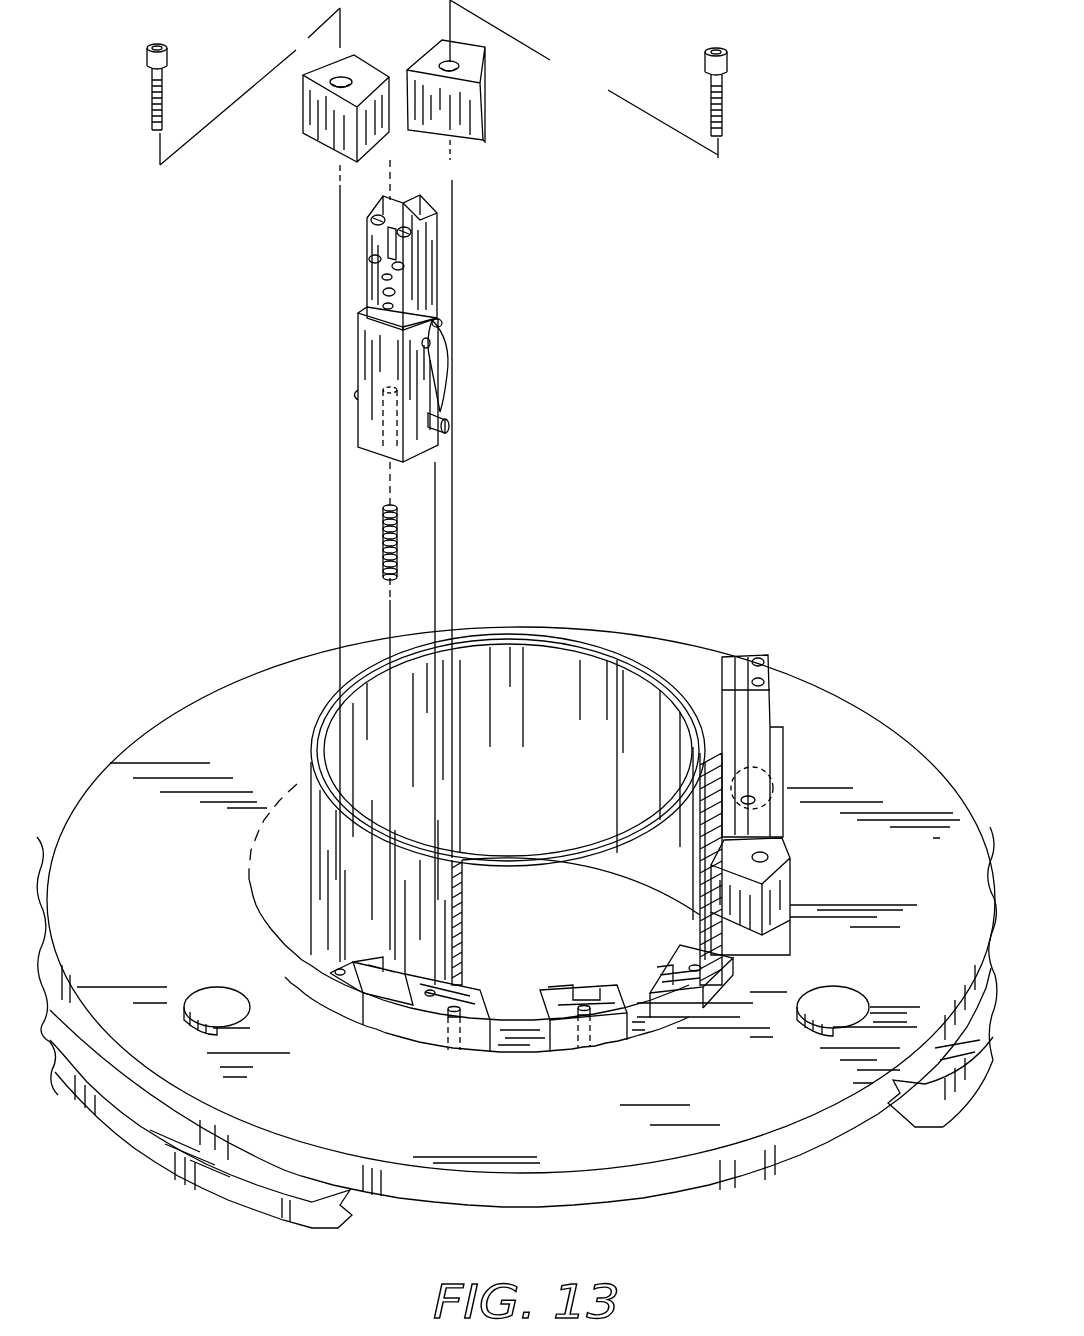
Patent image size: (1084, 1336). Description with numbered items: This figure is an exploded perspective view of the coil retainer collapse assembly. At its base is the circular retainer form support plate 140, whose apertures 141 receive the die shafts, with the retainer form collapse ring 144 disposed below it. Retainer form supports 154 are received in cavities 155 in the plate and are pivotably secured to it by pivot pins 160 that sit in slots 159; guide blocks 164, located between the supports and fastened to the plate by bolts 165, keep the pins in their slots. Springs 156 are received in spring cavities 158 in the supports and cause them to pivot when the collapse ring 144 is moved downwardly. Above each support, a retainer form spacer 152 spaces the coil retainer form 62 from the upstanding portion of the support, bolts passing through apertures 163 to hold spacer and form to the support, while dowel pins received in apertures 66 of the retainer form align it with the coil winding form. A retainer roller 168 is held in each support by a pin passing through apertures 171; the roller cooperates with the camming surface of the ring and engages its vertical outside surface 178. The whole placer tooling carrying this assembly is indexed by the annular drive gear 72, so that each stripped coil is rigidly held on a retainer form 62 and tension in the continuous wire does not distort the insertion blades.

The retainer form support plate 140 is at (200, 722).
The apertures 141 is at (203, 987).
The retainer form collapse ring 144 is at (257, 1193).
The retainer form spacers 152 is at (425, 245).
The retainer form supports 154 is at (425, 390).
The cavities 155 is at (388, 998).
The springs 156 is at (382, 532).
The spring cavities 158 is at (383, 413).
The slots 159 is at (358, 988).
The pivot pins 160 is at (437, 418).
The apertures 163 is at (387, 292).
The guide blocks 164 is at (315, 112).
The bolts 165 is at (170, 53).
The retainer rollers 168 is at (440, 345).
The apertures 171 is at (433, 318).
The vertical outside surface 178 is at (425, 890).
The annular drive gear 72 is at (424, 860).
The apertures 66 is at (403, 230).
The coil retainer forms 62 is at (375, 242).